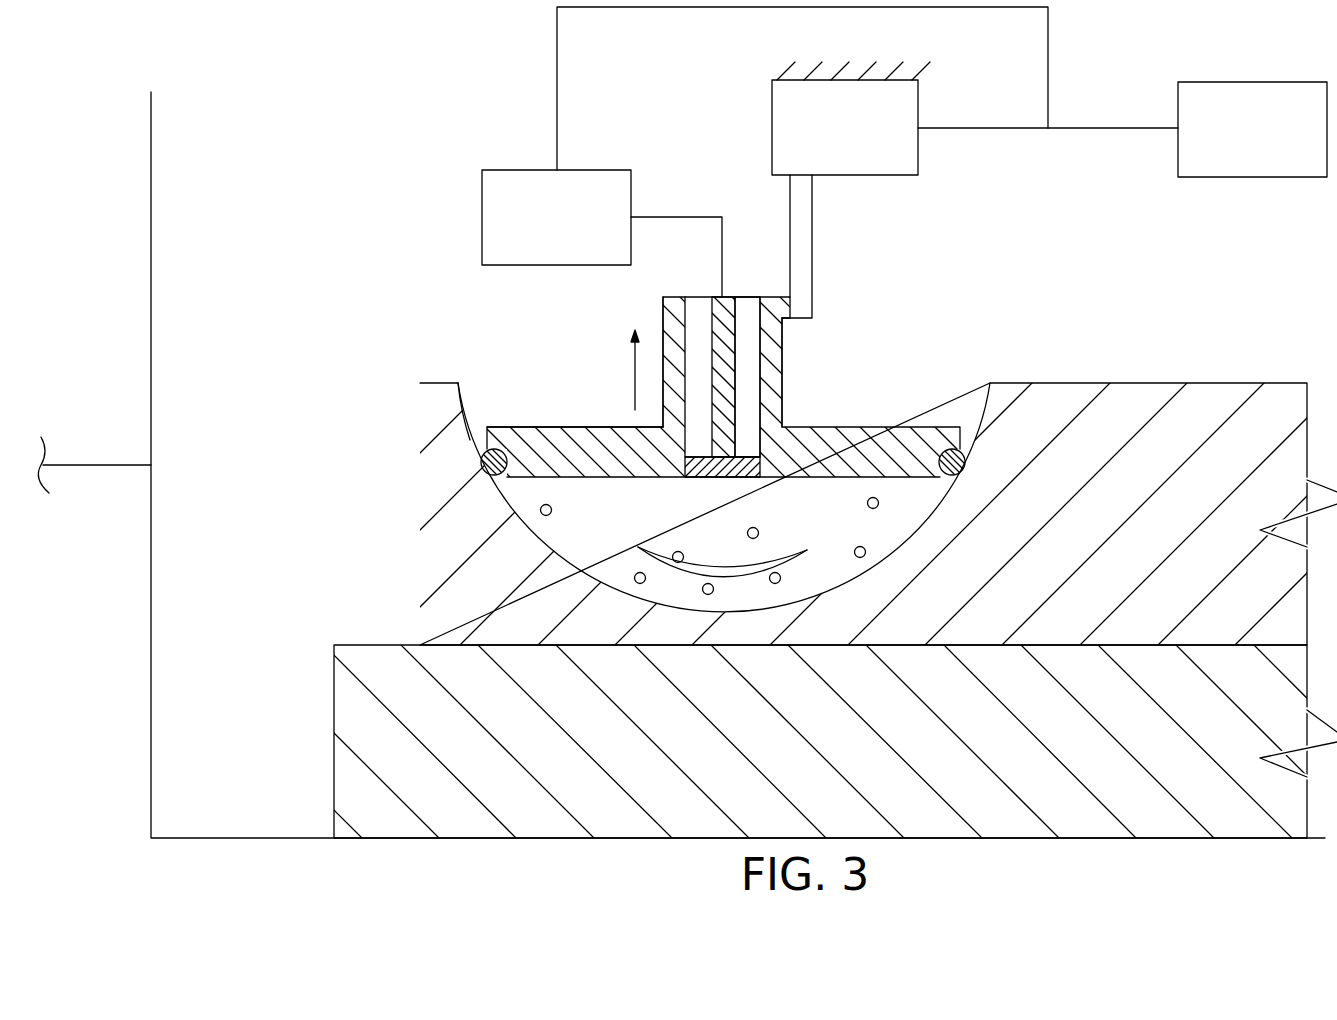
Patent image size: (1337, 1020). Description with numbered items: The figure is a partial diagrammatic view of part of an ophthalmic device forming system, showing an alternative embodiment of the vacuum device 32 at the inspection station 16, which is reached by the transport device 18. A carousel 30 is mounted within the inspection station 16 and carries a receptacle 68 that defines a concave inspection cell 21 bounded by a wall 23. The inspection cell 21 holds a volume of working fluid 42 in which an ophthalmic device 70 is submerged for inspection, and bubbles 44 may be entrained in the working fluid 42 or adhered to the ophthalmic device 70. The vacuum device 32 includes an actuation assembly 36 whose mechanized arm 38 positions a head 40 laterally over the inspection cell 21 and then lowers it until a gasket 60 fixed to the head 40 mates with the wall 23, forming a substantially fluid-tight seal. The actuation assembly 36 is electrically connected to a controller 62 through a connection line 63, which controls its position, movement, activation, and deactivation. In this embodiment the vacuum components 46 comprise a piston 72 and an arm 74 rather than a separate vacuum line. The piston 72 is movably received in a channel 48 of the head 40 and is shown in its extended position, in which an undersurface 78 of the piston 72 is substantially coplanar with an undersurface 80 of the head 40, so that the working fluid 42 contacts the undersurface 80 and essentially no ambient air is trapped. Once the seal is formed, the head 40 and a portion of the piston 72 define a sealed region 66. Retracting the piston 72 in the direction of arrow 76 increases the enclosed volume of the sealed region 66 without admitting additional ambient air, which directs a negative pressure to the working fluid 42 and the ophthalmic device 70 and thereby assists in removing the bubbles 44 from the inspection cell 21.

The inspection station 16 is at (206, 805).
The transport device 18 is at (98, 465).
The inspection cell 21 is at (526, 402).
The wall 23 is at (463, 413).
The carousel 30 is at (334, 708).
The vacuum device 32 is at (707, 158).
The actuation assembly 36 is at (878, 171).
The arm 38 is at (812, 248).
The head 40 is at (870, 427).
The working fluid 42 is at (552, 551).
The bubbles 44 is at (751, 527).
The vacuum components 46 is at (592, 264).
The channel 48 is at (743, 292).
The gasket 60 is at (952, 449).
The controller 62 is at (1287, 169).
The connection line 63 is at (1110, 130).
The sealed region 66 is at (508, 490).
The receptacle 68 is at (1130, 383).
The ophthalmic device 70 is at (809, 547).
The piston 72 is at (728, 292).
The arm 74 is at (656, 217).
The arrow 76 is at (632, 375).
The undersurface of piston 78 is at (712, 478).
The undersurface of head 80 is at (702, 548).